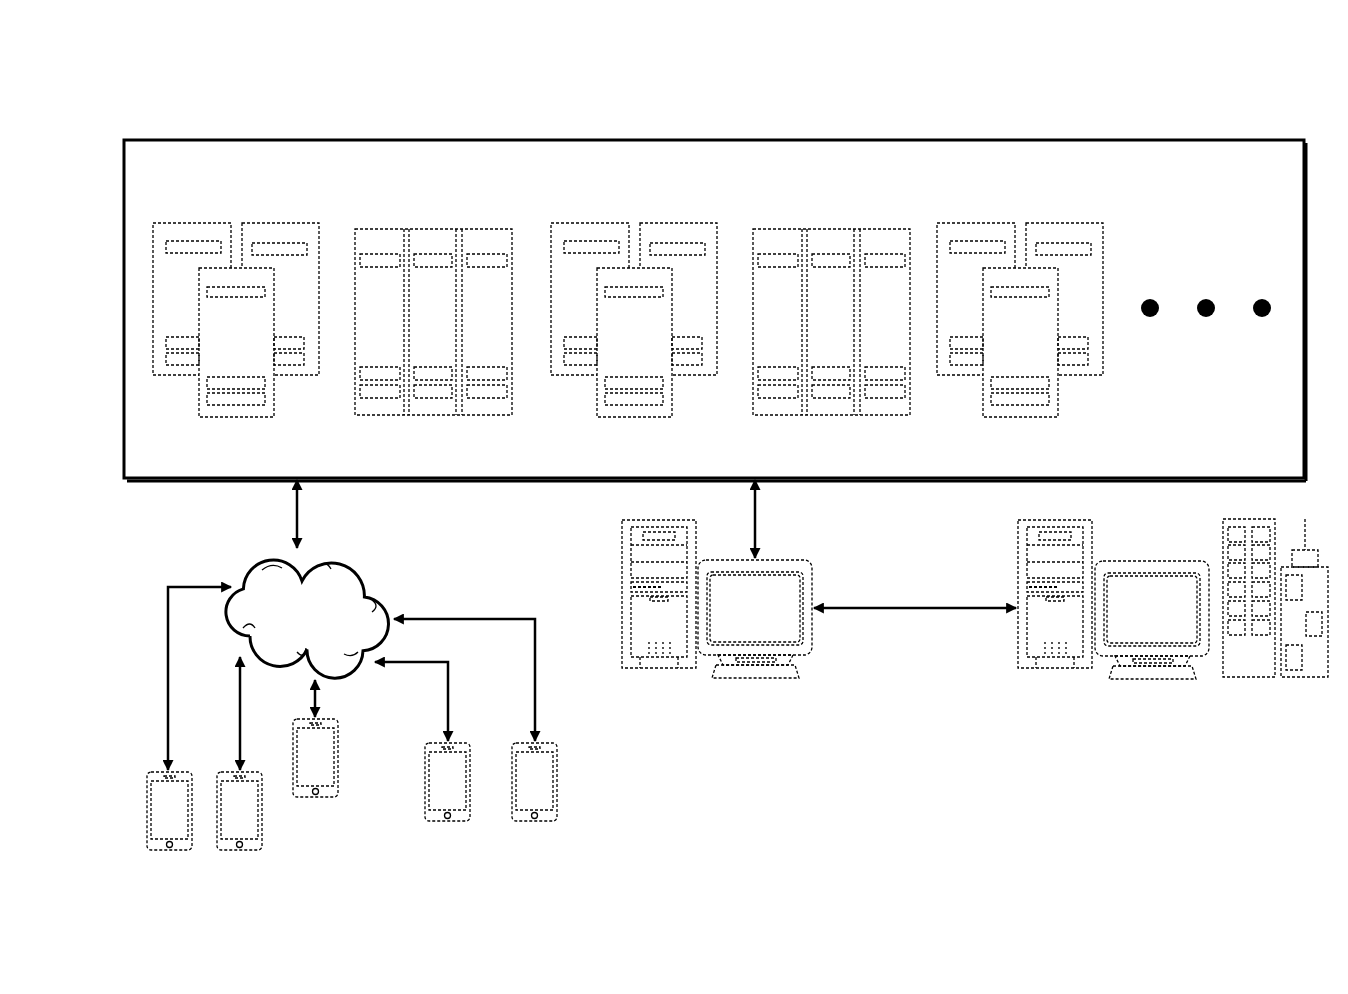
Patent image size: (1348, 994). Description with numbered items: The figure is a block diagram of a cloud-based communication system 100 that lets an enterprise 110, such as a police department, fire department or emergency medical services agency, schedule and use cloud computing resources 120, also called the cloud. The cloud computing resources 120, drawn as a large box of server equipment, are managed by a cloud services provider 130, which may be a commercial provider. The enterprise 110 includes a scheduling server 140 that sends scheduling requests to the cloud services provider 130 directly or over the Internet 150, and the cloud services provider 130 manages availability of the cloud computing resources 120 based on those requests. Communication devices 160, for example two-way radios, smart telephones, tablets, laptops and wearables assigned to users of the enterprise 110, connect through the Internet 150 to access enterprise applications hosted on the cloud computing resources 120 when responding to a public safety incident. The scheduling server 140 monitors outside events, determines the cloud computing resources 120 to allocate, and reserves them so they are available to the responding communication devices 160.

The cloud-based communication system 100 is at (128, 78).
The enterprise 110 is at (1304, 678).
The cloud computing resources 120 is at (123, 310).
The cloud services provider 130 is at (658, 669).
The scheduling server 140 is at (1052, 669).
The Internet 150 is at (240, 571).
The communication devices 160 is at (171, 851).